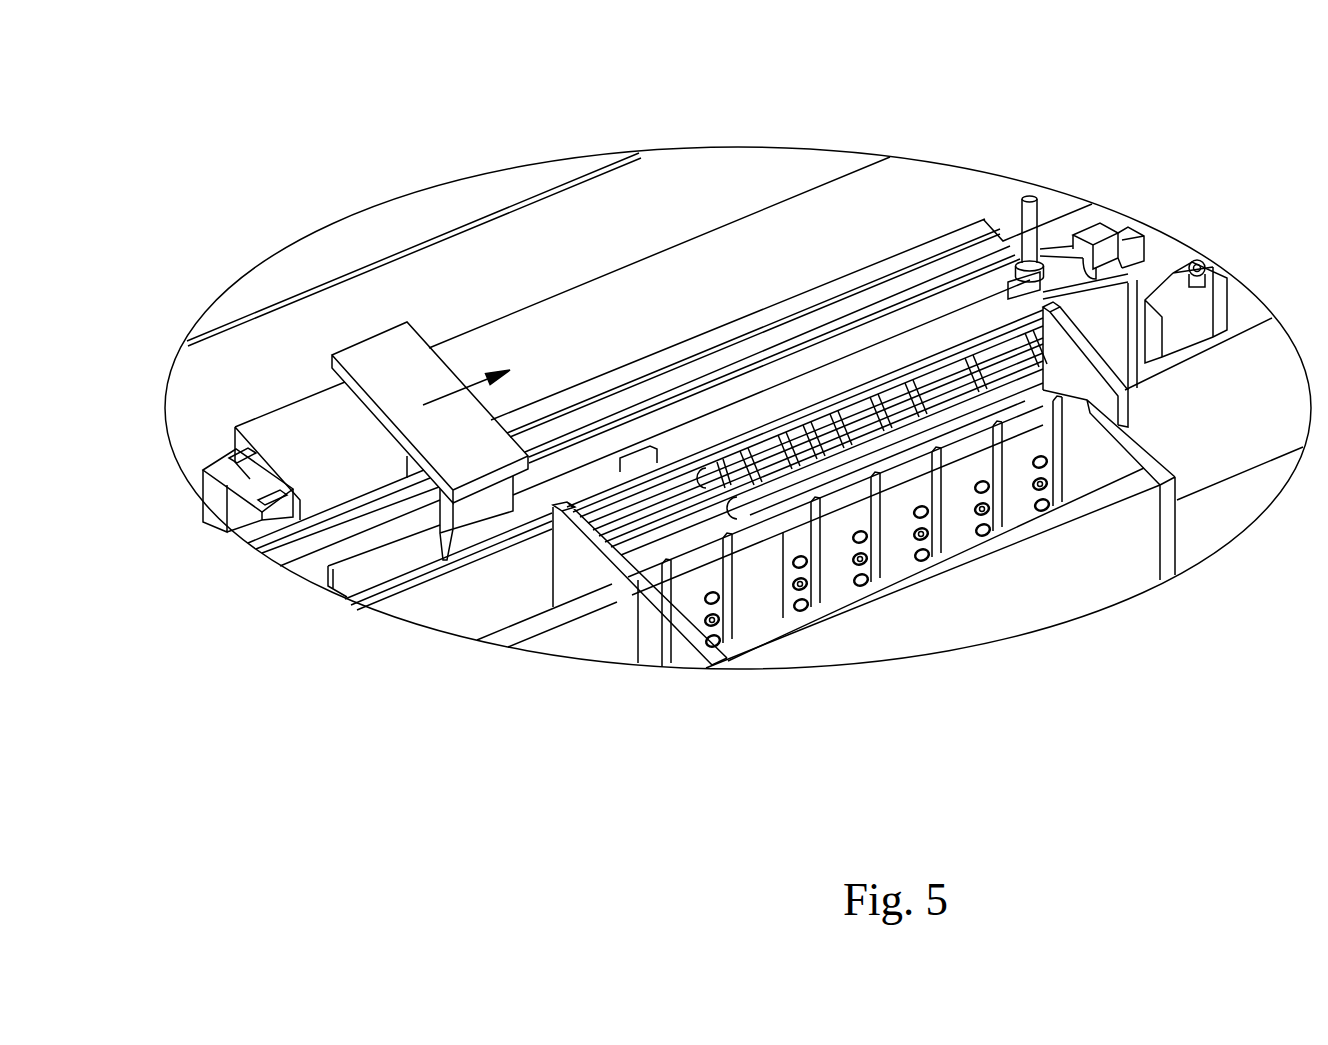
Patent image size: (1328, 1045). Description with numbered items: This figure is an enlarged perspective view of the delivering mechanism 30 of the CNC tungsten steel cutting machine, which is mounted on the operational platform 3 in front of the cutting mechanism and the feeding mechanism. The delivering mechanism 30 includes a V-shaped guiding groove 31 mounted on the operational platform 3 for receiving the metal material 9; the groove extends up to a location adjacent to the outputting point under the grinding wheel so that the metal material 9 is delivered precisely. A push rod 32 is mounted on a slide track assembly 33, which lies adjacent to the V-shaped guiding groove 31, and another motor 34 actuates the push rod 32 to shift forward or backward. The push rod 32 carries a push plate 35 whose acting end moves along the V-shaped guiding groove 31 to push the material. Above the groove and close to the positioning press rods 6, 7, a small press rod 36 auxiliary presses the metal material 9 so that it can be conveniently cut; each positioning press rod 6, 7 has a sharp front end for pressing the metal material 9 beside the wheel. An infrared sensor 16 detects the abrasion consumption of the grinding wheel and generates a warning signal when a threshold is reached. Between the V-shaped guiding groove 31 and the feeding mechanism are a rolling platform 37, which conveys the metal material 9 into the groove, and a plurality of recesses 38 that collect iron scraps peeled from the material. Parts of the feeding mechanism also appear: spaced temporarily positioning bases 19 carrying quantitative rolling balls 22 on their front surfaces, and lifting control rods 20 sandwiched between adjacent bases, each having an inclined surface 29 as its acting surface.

The operational platform 3 is at (240, 368).
The positioning press rod 6 is at (1092, 237).
The positioning press rod 7 is at (1118, 228).
The metal material 9 is at (1085, 395).
The infrared sensor 16 is at (1207, 275).
The temporarily positioning base 19 is at (875, 572).
The lifting control rod 20 is at (833, 583).
The quantitative rolling ball 22 is at (933, 562).
The inclined surface 29 is at (763, 527).
The delivering mechanism 30 is at (590, 208).
The V-shaped guiding groove 31 is at (357, 580).
The push rod 32 is at (390, 355).
The slide track assembly 33 is at (770, 240).
The motor 34 is at (213, 493).
The push plate 35 is at (532, 510).
The small press rod 36 is at (995, 217).
The rolling platform 37 is at (630, 517).
The recess 38 is at (688, 518).